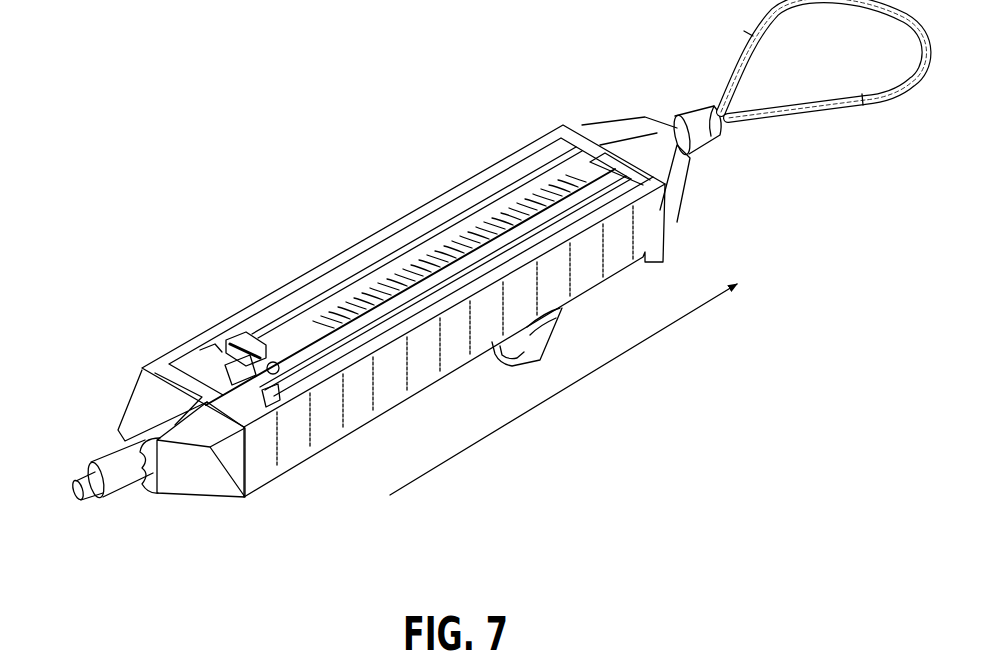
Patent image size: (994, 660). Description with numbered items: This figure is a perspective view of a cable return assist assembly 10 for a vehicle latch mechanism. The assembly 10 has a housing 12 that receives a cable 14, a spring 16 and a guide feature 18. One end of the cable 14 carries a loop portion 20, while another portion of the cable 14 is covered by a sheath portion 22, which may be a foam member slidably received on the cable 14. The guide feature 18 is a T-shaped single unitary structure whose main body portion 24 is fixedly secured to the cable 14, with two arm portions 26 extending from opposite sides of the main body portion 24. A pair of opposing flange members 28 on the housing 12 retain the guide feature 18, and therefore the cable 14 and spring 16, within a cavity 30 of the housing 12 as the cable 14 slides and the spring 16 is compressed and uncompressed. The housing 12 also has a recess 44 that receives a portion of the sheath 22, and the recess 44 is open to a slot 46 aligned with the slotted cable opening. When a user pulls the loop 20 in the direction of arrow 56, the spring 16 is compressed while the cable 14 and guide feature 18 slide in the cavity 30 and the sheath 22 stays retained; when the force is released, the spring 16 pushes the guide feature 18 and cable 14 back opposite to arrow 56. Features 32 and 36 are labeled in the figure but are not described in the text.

The cable return assist assembly 10 is at (552, 82).
The housing 12 is at (393, 220).
The cable 14 is at (75, 488).
The spring 16 is at (505, 222).
The guide feature 18 is at (207, 390).
The loop portion 20 is at (873, 100).
The sheath portion 22 is at (110, 460).
The main body portion 24 is at (255, 410).
The arm portions 26 is at (278, 398).
The flange members 28 is at (423, 290).
The cavity 30 is at (487, 210).
The latch feature 32 is at (210, 358).
The strain relief 36 is at (702, 137).
The recess 44 is at (133, 490).
The slot 46 is at (160, 418).
The arrow 56 is at (590, 380).